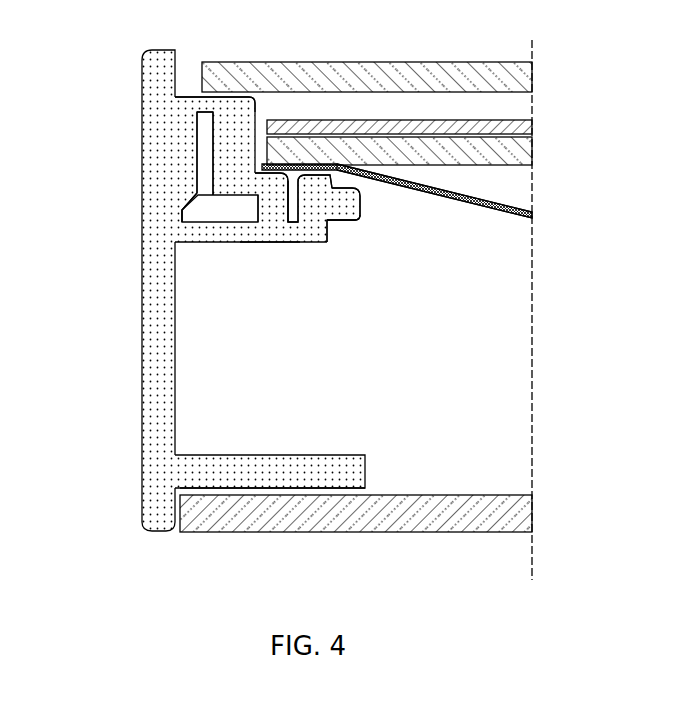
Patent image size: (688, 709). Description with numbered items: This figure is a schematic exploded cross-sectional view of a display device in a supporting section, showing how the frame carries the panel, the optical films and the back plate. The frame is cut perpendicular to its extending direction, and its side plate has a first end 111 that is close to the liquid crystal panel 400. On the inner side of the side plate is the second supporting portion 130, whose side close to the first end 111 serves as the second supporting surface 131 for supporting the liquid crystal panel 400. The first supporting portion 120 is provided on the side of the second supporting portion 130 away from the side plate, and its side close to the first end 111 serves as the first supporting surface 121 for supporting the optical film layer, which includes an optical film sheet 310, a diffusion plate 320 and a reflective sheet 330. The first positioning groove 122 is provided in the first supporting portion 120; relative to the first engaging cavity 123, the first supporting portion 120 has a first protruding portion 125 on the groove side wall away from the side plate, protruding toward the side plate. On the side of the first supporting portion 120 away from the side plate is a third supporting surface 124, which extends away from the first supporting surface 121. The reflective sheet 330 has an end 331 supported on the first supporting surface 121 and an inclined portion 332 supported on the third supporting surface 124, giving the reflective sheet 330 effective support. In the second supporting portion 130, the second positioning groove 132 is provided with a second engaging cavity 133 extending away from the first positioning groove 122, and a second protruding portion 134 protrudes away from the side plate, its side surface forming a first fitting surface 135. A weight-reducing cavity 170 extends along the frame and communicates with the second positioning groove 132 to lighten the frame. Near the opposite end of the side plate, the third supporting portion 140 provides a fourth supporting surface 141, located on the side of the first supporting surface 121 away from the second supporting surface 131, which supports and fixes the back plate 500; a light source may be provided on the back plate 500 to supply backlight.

The first end 111 is at (157, 76).
The first supporting portion 120 is at (277, 205).
The first supporting surface 121 is at (262, 176).
The first positioning groove 122 is at (293, 200).
The first engaging cavity 123 is at (312, 205).
The third supporting surface 124 is at (305, 189).
The first protruding portion 125 is at (333, 220).
The second supporting portion 130 is at (227, 243).
The second supporting surface 131 is at (225, 97).
The second positioning groove 132 is at (205, 173).
The second engaging cavity 133 is at (188, 217).
The second protruding portion 134 is at (187, 133).
The first fitting surface 135 is at (192, 157).
The third supporting portion 140 is at (205, 463).
The fourth supporting surface 141 is at (300, 488).
The weight-reducing cavity 170 is at (243, 213).
The optical film sheet 310 is at (526, 127).
The diffusion plate 320 is at (520, 154).
The reflective sheet 330 is at (512, 210).
The end 331 is at (263, 243).
The inclined portion 332 is at (407, 188).
The liquid crystal panel 400 is at (342, 70).
The back plate 500 is at (527, 513).